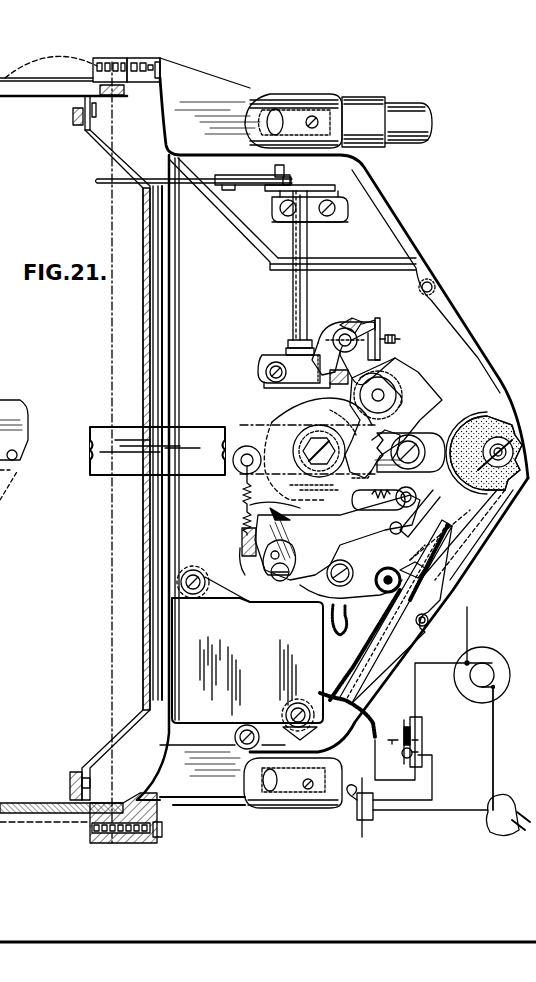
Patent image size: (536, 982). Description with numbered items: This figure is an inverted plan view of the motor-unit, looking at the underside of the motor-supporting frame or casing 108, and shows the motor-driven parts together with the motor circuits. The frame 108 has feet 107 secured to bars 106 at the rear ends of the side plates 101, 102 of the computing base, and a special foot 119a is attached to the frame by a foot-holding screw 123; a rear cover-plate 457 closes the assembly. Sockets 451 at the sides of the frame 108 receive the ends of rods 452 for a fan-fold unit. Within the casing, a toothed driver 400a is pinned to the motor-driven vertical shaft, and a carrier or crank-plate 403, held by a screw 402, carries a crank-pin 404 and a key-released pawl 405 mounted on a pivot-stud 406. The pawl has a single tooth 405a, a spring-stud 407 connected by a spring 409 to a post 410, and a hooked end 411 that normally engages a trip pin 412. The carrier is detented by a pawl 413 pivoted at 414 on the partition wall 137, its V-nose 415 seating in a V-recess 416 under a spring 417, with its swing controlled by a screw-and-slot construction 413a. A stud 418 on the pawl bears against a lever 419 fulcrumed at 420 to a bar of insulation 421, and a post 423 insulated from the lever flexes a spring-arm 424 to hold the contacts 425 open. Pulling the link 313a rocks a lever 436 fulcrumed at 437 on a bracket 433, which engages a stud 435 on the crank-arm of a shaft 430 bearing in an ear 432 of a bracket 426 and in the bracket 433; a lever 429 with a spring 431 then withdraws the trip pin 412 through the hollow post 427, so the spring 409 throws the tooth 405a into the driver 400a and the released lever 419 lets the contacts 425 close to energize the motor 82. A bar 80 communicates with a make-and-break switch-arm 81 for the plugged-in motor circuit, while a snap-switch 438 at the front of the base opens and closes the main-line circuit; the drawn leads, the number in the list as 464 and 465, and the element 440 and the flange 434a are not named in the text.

The bar 80 is at (402, 770).
The make-and-break switch-arm 81 is at (404, 728).
The motor 82 is at (500, 658).
The side plate 101 is at (18, 803).
The side plate 102 is at (30, 97).
The bar 106 is at (121, 96).
The foot 107 is at (126, 80).
The motor-supporting frame 108 is at (432, 248).
The special foot 119a is at (483, 405).
The foot-holding screw 123 is at (493, 444).
The partition wall 137 is at (445, 363).
The link 313a is at (97, 181).
The toothed driver 400a is at (282, 428).
The screw 402 is at (300, 448).
The carrier or crank-plate 403 is at (405, 404).
The crank-pin 404 is at (428, 433).
The key-released pawl 405 is at (339, 420).
The tooth 405a is at (392, 437).
The pivot-stud 406 is at (385, 393).
The spring-stud 407 is at (416, 498).
The spring 409 is at (320, 487).
The post 410 is at (233, 528).
The hooked end 411 is at (320, 330).
The trip pin 412 is at (356, 325).
The detent pawl 413 is at (308, 600).
The screw-and-slot construction 413a is at (255, 580).
The pivot-stud 414 is at (290, 577).
The V-nose 415 is at (257, 551).
The V-recess 416 is at (330, 525).
The spring 417 is at (240, 494).
The stud 418 is at (392, 531).
The lever 419 is at (430, 545).
The fulcrum 420 is at (495, 522).
The bar of insulation 421 is at (398, 635).
The post 423 is at (388, 570).
The spring-arm 424 is at (360, 632).
The contacts 425 is at (424, 561).
The bracket 426 is at (294, 371).
The hollow post 427 is at (266, 375).
The lever 429 is at (400, 340).
The shaft 430 is at (293, 288).
The spring 431 is at (382, 340).
The ear 432 is at (286, 350).
The bracket 433 is at (334, 196).
The bracket flange 434a is at (278, 202).
The stud 435 is at (283, 170).
The lever 436 is at (288, 184).
The fulcrum 437 is at (248, 188).
The snap-switch 438 is at (357, 822).
The cross member 440 is at (157, 451).
The socket 451 is at (308, 97).
The rod 452 is at (430, 118).
The rear cover-plate 457 is at (143, 506).
The lead wire 464 is at (493, 746).
The lead wire 465 is at (448, 810).